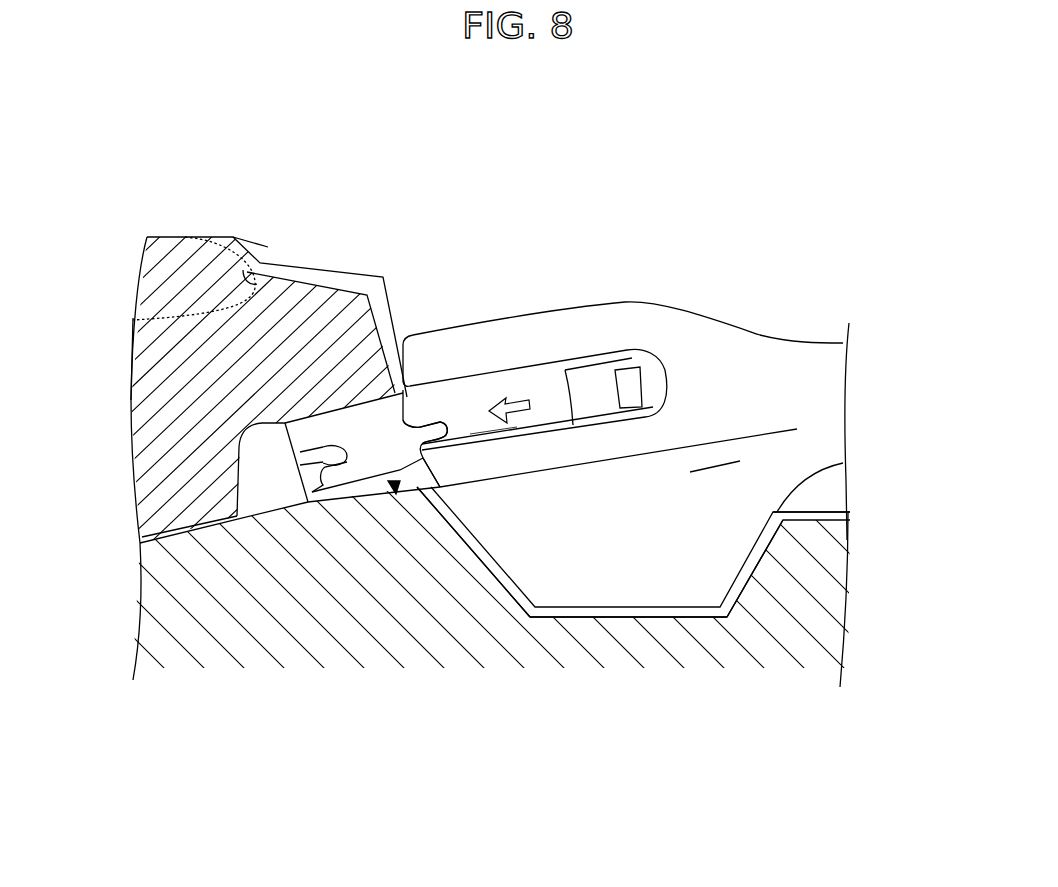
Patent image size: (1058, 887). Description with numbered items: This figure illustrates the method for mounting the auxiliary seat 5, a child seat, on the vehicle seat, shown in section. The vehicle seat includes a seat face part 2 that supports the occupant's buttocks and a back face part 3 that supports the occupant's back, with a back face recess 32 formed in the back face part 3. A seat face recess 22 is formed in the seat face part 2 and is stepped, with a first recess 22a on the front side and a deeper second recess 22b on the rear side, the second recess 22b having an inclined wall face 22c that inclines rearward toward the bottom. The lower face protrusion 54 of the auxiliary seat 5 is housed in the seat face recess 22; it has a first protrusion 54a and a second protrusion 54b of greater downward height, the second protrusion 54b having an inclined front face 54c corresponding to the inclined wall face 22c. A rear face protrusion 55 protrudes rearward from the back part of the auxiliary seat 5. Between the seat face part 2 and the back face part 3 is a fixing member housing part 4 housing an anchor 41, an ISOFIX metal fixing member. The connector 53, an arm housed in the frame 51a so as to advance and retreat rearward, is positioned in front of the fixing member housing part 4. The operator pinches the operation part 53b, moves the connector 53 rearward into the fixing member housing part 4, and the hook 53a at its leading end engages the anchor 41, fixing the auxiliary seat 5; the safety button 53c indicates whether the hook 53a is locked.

The seat face part 2 is at (827, 577).
The back face part 3 is at (187, 237).
The fixing member housing part 4 is at (394, 494).
The auxiliary seat 5 is at (736, 240).
The seat face recess 22 is at (752, 750).
The first recess 22a is at (797, 515).
The second recess 22b is at (603, 618).
The inclined wall face 22c is at (728, 615).
The back face recess 32 is at (133, 318).
The anchor 41 is at (283, 426).
The frame 51a is at (728, 323).
The connector 53 is at (497, 378).
The hook 53a is at (440, 417).
The operation part 53b is at (581, 383).
The safety button 53c is at (628, 377).
The lower face protrusion 54 is at (910, 413).
The first protrusion 54a is at (800, 497).
The second protrusion 54b is at (740, 461).
The inclined front face 54c is at (843, 463).
The rear face protrusion 55 is at (236, 240).